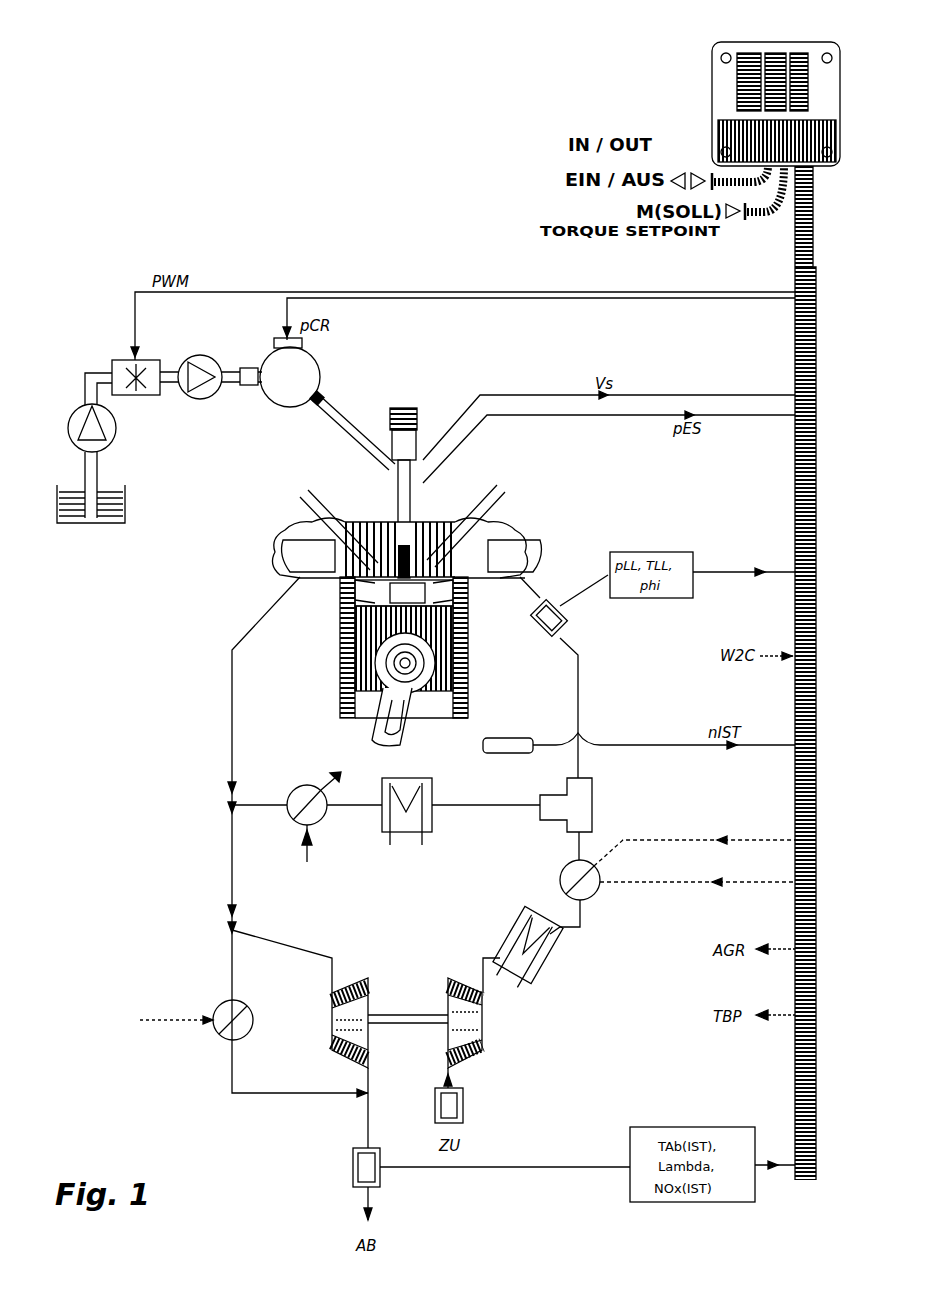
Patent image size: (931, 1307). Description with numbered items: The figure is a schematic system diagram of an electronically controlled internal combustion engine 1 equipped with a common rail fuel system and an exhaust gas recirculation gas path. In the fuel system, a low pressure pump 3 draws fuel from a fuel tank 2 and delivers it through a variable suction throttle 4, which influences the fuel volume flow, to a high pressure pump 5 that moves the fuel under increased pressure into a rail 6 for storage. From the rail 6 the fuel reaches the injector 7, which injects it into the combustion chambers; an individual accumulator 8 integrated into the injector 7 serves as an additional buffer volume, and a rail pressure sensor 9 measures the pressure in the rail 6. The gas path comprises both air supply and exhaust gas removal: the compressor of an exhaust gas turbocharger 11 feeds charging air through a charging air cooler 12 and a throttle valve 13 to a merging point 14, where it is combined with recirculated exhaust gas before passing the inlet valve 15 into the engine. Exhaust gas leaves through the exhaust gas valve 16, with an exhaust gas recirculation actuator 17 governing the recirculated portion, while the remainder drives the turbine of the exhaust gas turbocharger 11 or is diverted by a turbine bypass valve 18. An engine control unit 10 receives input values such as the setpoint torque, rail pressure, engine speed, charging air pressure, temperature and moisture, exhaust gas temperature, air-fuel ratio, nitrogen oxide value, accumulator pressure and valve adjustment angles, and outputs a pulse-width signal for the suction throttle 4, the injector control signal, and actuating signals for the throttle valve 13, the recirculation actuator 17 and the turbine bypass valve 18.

The internal combustion engine 1 is at (205, 162).
The fuel tank 2 is at (60, 488).
The low pressure pump 3 is at (70, 415).
The variable suction throttle 4 is at (112, 362).
The high pressure pump 5 is at (193, 396).
The rail 6 is at (318, 370).
The injector 7 is at (413, 392).
The individual accumulator 8 is at (418, 430).
The rail pressure sensor 9 is at (274, 345).
The engine control unit 10 is at (765, 44).
The exhaust gas turbocharger 11 is at (412, 968).
The charging air cooler 12 is at (560, 965).
The throttle valve 13 is at (561, 875).
The merging point 14 is at (593, 790).
The inlet valve 15 is at (508, 492).
The exhaust gas valve 16 is at (320, 512).
The AGR actuator 17 is at (299, 787).
The turbine bypass valve 18 is at (225, 1003).